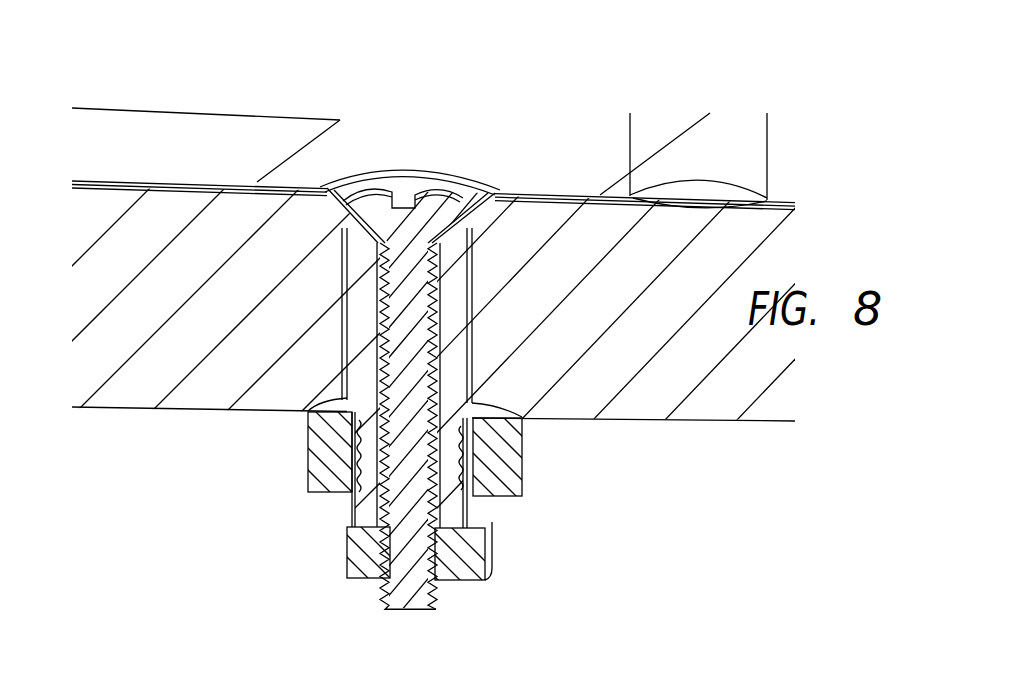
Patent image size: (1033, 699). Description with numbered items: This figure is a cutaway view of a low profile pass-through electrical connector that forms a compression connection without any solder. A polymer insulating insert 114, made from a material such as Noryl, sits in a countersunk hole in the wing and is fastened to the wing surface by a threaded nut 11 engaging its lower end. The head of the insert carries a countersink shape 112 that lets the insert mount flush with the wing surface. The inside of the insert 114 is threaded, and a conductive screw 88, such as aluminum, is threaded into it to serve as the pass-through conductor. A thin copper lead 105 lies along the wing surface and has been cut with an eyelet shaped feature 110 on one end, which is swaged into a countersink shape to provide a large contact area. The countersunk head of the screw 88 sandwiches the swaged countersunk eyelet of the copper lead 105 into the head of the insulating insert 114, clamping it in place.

The copper lead 105 is at (233, 183).
The countersink shape 112 is at (357, 172).
The eyelet shaped feature 110 is at (413, 192).
The polymer insulating insert 114 is at (458, 328).
The conductive screw 88 is at (407, 413).
The threaded nut 11 is at (500, 461).